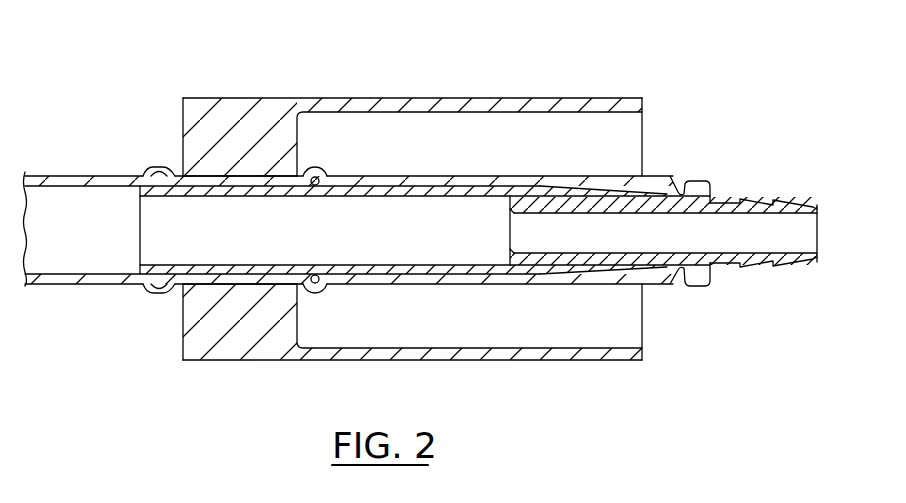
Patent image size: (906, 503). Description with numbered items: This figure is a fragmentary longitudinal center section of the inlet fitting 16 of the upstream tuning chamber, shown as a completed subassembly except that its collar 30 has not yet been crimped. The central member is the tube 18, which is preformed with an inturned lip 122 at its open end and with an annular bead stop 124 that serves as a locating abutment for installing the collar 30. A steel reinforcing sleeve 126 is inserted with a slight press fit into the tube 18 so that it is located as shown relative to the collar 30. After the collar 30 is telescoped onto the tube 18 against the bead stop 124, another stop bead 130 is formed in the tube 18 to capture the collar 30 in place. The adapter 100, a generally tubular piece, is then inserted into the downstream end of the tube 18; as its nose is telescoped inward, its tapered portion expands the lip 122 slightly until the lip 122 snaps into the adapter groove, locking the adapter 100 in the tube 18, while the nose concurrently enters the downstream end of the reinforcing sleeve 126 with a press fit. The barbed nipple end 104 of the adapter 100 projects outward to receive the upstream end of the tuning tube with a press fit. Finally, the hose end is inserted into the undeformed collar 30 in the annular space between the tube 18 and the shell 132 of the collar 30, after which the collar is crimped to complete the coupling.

The inlet fitting 16 is at (175, 123).
The tube 18 is at (56, 292).
The collar 30 is at (538, 362).
The adapter 100 is at (553, 193).
The nipple end 104 is at (786, 268).
The inturned lip 122 is at (684, 184).
The annular bead stop 124 is at (152, 165).
The steel reinforcing sleeve 126 is at (141, 240).
The stop bead 130 is at (314, 165).
The shell 132 is at (460, 97).